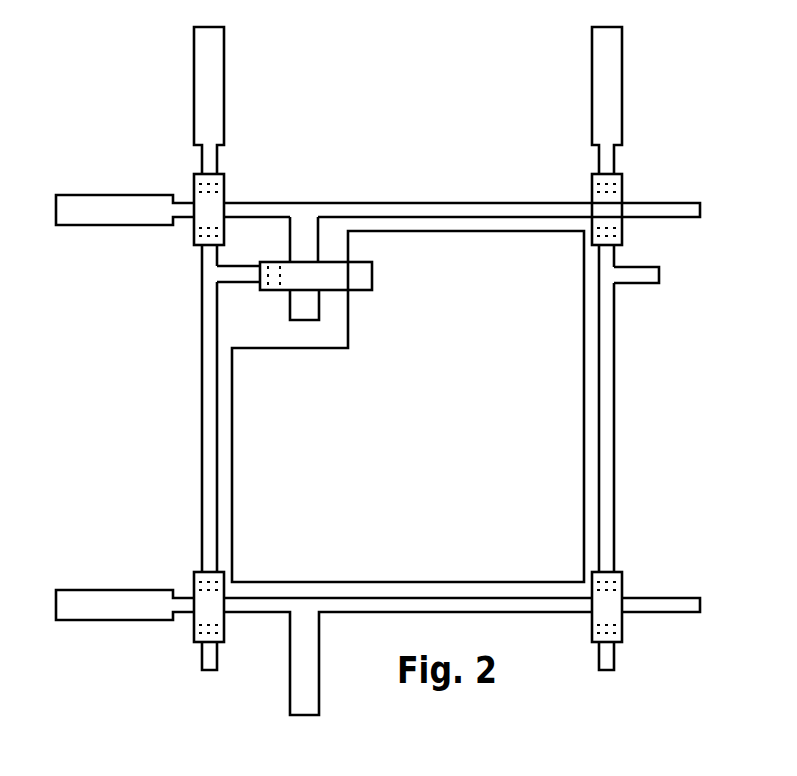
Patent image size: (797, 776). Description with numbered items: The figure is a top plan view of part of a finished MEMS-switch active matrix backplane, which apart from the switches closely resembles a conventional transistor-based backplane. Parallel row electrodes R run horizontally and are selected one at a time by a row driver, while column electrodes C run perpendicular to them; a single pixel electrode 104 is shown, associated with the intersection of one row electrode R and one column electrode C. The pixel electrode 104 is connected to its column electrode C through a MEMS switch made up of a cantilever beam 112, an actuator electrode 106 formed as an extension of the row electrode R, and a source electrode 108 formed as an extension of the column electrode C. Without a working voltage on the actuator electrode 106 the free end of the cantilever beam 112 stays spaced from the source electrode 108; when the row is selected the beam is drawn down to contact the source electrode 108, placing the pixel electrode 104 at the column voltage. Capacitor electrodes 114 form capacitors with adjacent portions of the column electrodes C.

The pixel electrode 104 is at (462, 384).
The actuator electrode 106 is at (303, 235).
The source electrode 108 is at (235, 275).
The cantilever beam 112 is at (313, 275).
The capacitor electrode 114 is at (208, 210).
The row electrode R is at (97, 208).
The column electrode C is at (210, 122).